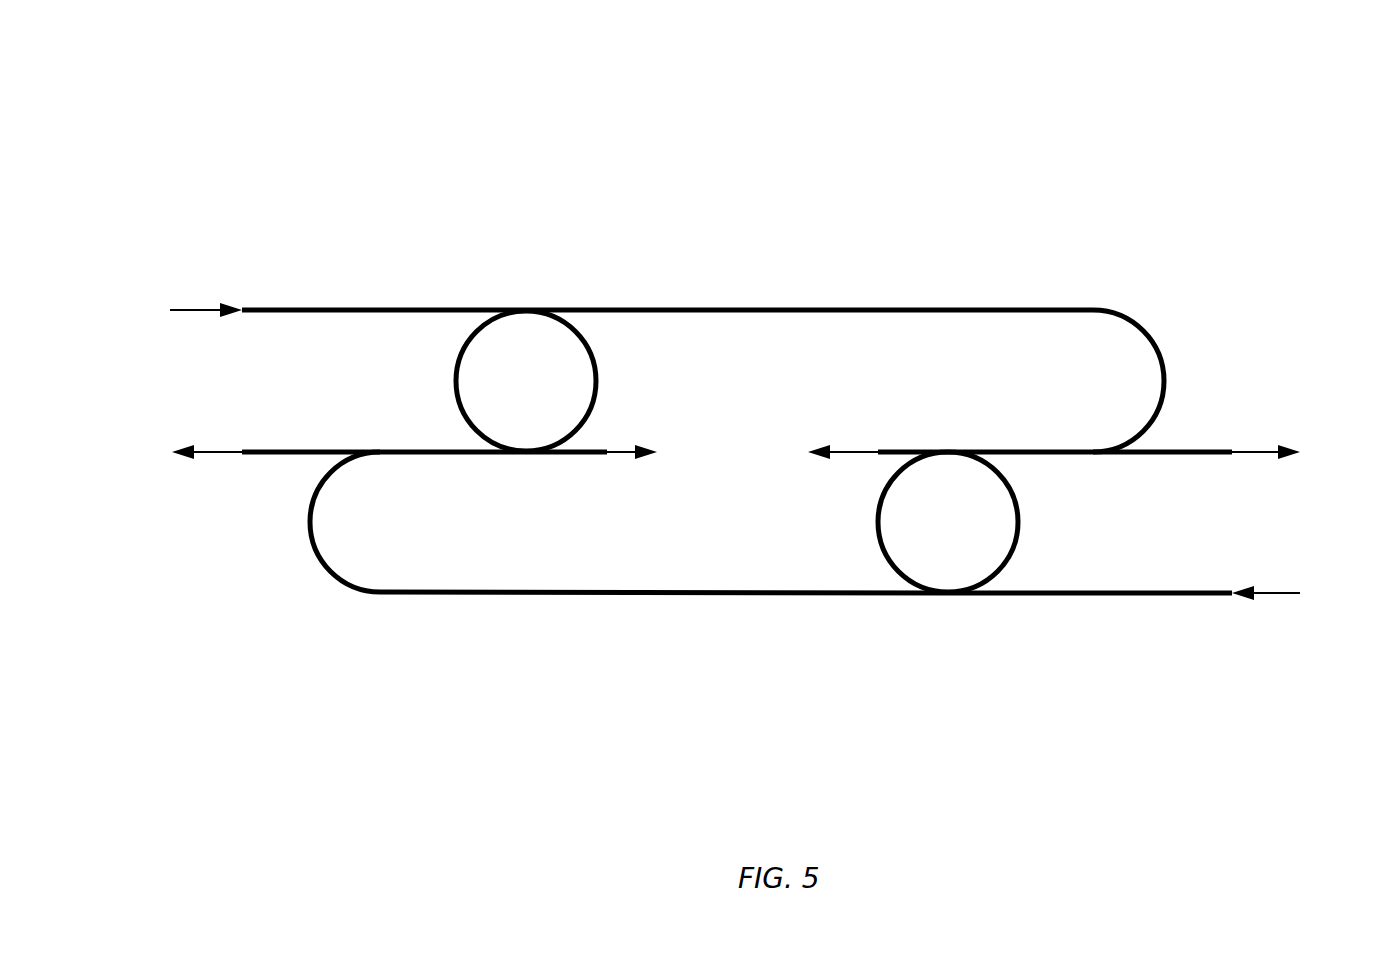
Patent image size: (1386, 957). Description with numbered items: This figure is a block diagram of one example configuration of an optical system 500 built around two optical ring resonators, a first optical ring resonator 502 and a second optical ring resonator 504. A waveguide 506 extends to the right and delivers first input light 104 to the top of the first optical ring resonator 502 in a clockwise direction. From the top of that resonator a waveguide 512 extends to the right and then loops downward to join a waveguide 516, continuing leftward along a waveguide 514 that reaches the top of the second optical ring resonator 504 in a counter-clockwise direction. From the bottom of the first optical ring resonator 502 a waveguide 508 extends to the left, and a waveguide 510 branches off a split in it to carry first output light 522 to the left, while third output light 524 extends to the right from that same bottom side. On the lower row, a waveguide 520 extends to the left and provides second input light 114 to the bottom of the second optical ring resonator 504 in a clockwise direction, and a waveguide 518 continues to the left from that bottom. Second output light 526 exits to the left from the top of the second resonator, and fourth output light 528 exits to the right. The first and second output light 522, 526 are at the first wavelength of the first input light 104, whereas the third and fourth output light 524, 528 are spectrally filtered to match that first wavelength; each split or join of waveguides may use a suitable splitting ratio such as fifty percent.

The optical system 500 is at (186, 180).
The first input light 104 is at (199, 308).
The waveguide 506 is at (389, 308).
The waveguide 512 is at (716, 308).
The first optical ring resonator 502 is at (598, 383).
The waveguide 510 is at (316, 450).
The waveguide 508 is at (424, 450).
The waveguide 514 is at (1022, 450).
The waveguide 516 is at (1198, 450).
The waveguide 518 is at (572, 590).
The waveguide 520 is at (1162, 590).
The second optical ring resonator 504 is at (1020, 522).
The first output light 522 is at (218, 455).
The third output light 524 is at (615, 455).
The second output light 526 is at (852, 455).
The fourth output light 528 is at (1252, 455).
The second input light 114 is at (1276, 590).